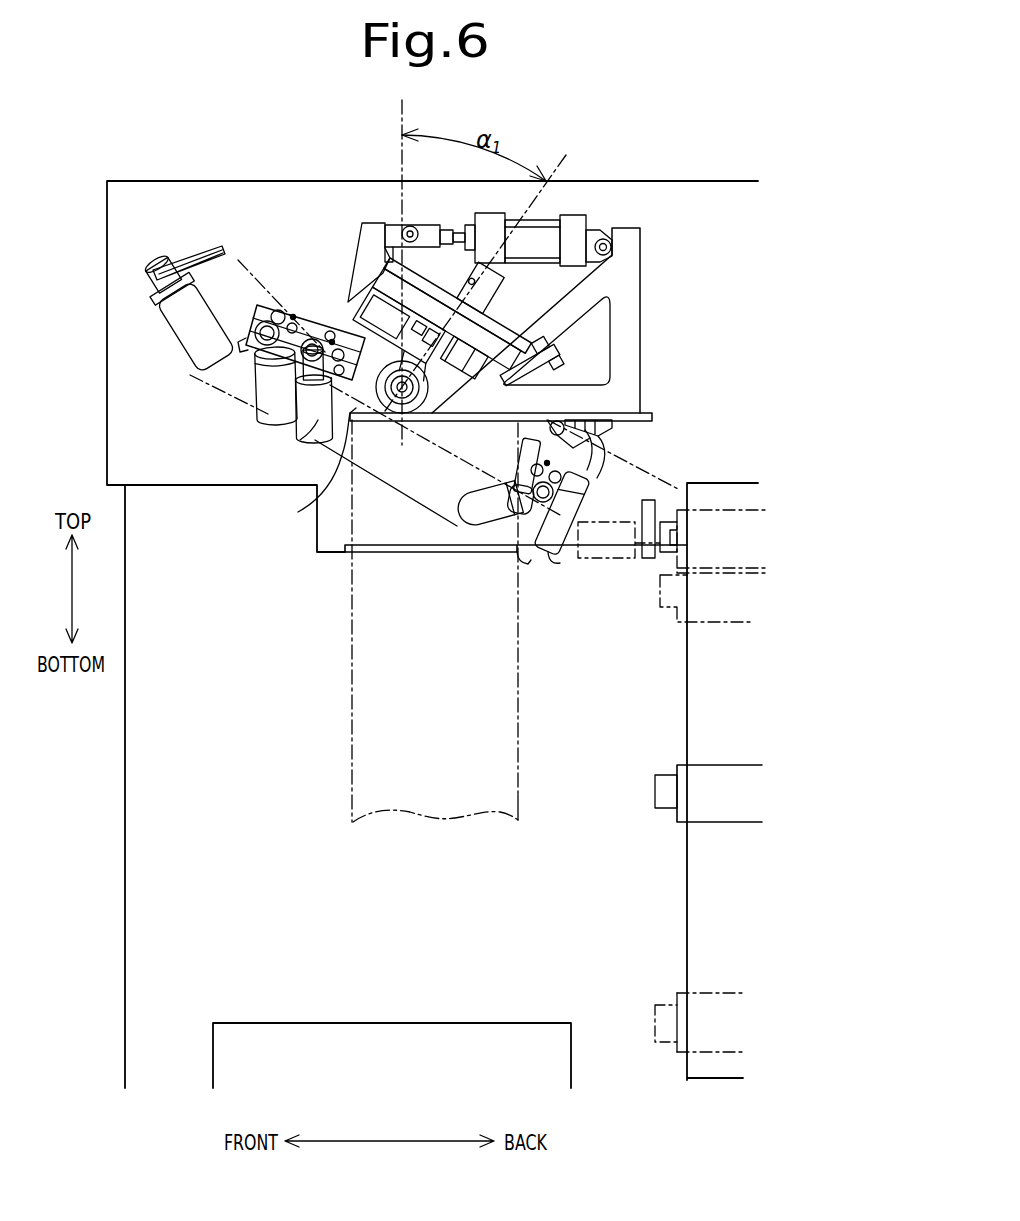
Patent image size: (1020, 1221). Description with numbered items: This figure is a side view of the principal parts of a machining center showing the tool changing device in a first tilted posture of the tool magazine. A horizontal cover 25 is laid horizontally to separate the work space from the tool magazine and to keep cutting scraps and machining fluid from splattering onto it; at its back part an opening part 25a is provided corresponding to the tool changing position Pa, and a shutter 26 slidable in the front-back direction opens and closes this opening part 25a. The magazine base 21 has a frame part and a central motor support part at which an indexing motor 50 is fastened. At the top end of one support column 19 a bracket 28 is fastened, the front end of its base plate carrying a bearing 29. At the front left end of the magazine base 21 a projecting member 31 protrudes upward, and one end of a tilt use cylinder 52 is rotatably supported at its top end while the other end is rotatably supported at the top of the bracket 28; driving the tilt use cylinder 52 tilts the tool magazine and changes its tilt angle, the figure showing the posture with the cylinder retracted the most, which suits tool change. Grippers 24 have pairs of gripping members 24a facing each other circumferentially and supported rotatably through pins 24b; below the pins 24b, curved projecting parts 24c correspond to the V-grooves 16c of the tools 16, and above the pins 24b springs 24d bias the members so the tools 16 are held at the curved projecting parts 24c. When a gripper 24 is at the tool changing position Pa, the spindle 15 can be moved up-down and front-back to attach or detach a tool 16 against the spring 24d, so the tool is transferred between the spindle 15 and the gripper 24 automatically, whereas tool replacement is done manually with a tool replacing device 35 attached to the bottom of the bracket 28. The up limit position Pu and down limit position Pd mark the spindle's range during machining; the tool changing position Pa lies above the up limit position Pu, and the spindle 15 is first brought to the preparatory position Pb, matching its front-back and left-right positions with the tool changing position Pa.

The spindle 15 is at (660, 810).
The tool 16 is at (290, 405).
The V-groove 16c is at (248, 383).
The support column 19 is at (347, 690).
The magazine base 21 is at (380, 305).
The gripper 24 is at (245, 260).
The gripping member 24a is at (295, 322).
The pin 24b is at (266, 320).
The curved projecting part 24c is at (262, 360).
The spring 24d is at (338, 345).
The horizontal cover 25 is at (373, 563).
The opening part 25a is at (518, 553).
The shutter 26 is at (557, 545).
The bracket 28 is at (640, 337).
The bearing 29 is at (309, 471).
The projecting member 31 is at (365, 232).
The tool replacing device 35 is at (610, 467).
The indexing motor 50 is at (530, 282).
The tilt use cylinder 52 is at (548, 232).
The tool changing position Pa is at (601, 562).
The up limit position Pu is at (718, 622).
The preparatory position Pb is at (742, 765).
The down limit position Pd is at (717, 993).